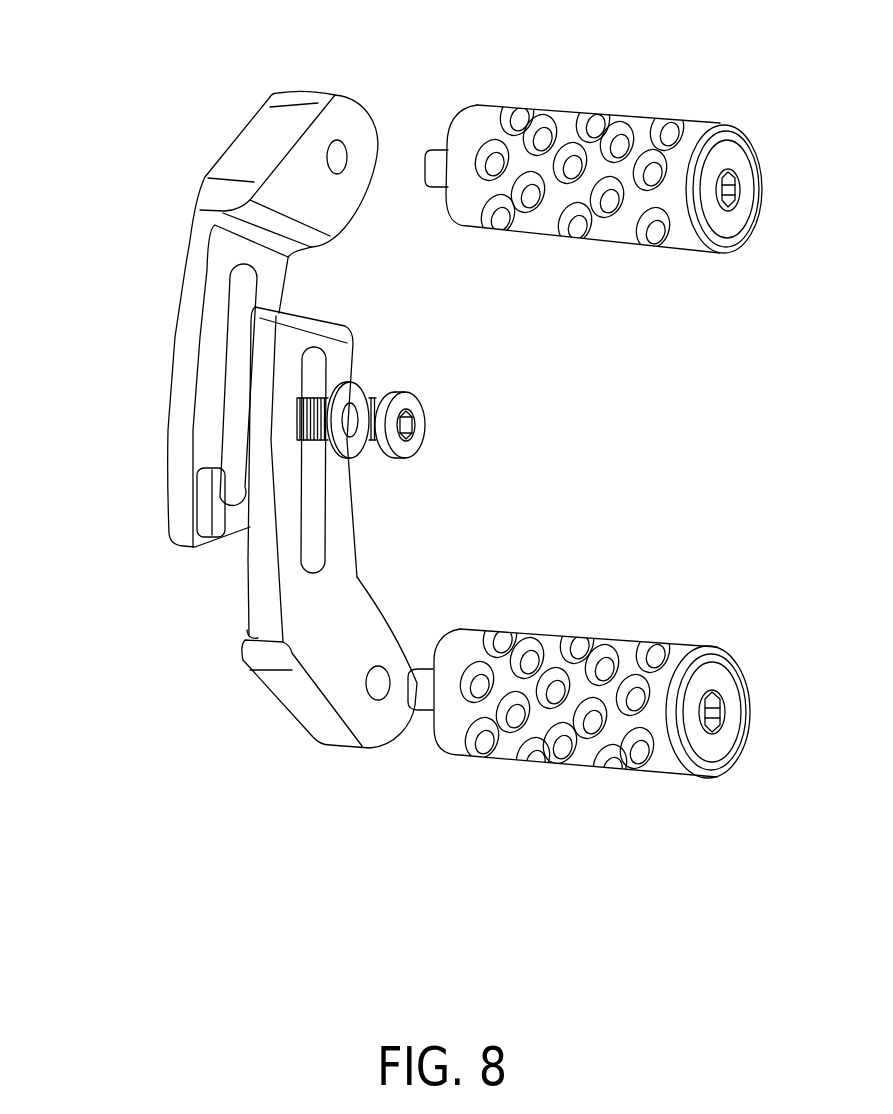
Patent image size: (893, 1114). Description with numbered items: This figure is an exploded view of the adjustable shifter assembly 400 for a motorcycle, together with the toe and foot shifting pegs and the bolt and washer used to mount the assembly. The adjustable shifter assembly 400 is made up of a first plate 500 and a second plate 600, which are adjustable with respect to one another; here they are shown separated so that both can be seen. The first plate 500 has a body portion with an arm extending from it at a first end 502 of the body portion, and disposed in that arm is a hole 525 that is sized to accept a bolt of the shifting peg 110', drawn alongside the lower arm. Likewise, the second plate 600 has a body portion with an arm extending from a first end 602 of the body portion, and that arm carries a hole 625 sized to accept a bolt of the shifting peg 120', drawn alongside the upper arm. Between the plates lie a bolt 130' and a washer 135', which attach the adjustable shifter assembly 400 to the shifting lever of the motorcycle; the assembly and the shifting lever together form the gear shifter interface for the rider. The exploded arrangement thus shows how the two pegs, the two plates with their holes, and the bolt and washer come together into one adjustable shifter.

The second plate 600 is at (215, 192).
The hole 625 is at (347, 157).
The first end 602 is at (293, 252).
The adjustable shifter assembly 400 is at (366, 324).
The washer 135' is at (392, 392).
The bolt 130' is at (404, 441).
The first plate 500 is at (255, 660).
The first end 502 is at (253, 637).
The hole 525 is at (382, 700).
The shifting peg 110' is at (627, 678).
The shifting peg 120' is at (627, 157).